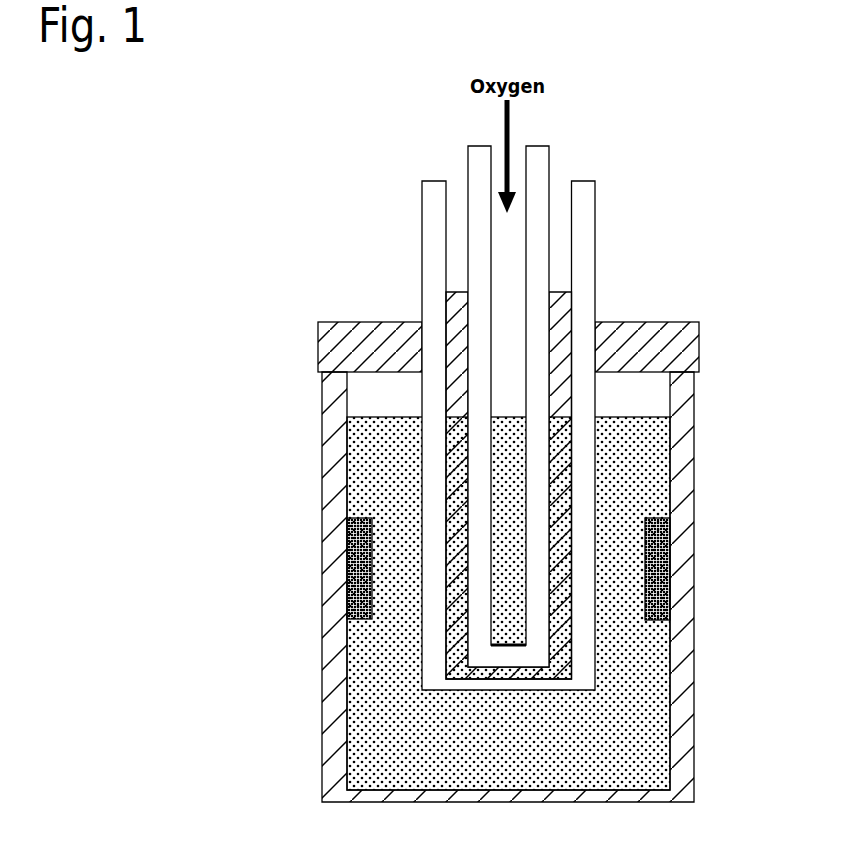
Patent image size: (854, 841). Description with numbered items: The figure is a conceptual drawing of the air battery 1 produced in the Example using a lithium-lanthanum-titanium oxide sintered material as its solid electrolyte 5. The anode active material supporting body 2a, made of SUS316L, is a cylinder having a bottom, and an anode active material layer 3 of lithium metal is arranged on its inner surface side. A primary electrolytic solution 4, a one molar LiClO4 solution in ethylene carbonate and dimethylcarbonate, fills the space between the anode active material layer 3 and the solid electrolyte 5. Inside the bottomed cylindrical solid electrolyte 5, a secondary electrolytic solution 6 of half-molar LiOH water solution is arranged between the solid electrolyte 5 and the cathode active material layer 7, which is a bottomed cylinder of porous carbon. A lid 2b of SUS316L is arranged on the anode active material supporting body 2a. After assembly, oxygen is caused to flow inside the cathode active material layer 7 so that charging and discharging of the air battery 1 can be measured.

The air battery 1 is at (367, 322).
The anode active material supporting body 2a is at (683, 398).
The lid 2b is at (683, 354).
The anode active material layer 3 is at (345, 583).
The primary electrolytic solution 4 is at (360, 457).
The solid electrolyte 5 is at (587, 207).
The secondary electrolytic solution 6 is at (562, 490).
The cathode active material layer 7 is at (478, 165).